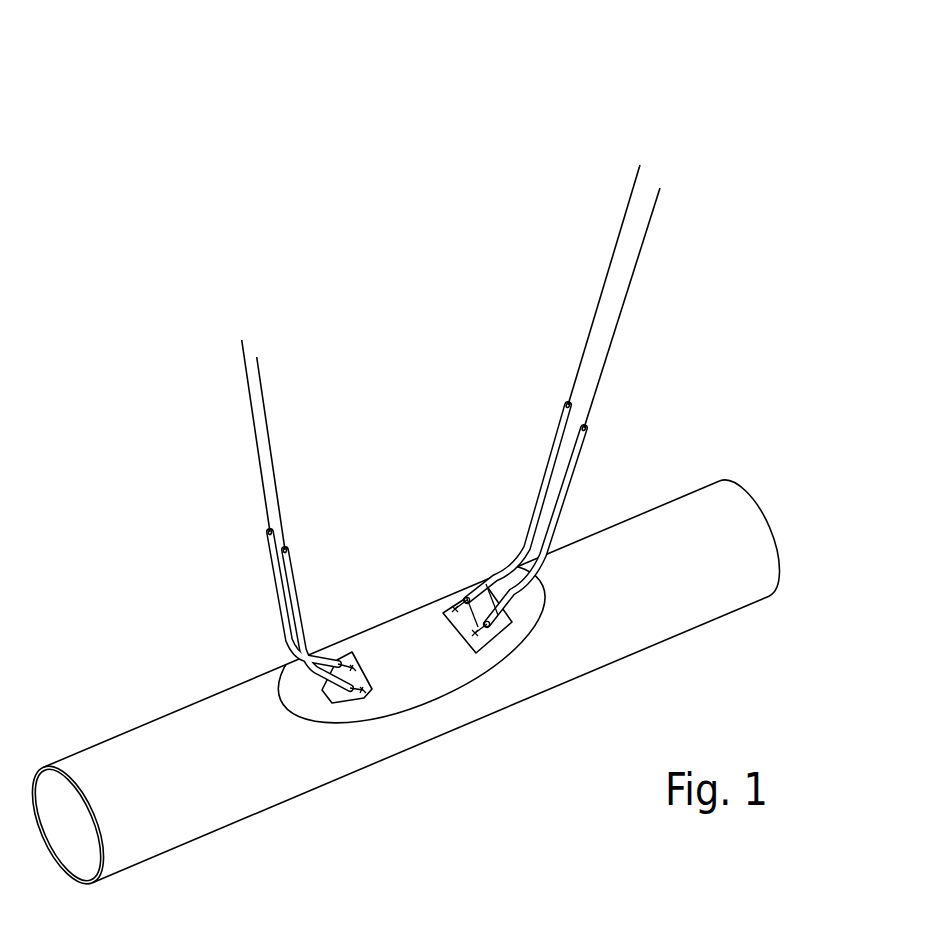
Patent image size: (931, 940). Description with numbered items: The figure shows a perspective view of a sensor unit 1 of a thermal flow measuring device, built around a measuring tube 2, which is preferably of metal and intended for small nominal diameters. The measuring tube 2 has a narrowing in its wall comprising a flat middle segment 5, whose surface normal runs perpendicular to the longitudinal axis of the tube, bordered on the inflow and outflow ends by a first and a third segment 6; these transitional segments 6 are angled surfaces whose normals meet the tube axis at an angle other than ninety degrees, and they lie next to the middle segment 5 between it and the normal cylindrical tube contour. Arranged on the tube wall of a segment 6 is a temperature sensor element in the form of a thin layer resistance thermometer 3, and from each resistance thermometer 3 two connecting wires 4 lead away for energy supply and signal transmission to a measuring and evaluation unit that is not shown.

The sensor unit 1 is at (426, 358).
The measuring tube 2 is at (735, 520).
The resistance thermometer 3 is at (318, 702).
The connecting wires 4 is at (580, 438).
The middle segment 5 is at (423, 688).
The first and third segment 6 is at (352, 710).